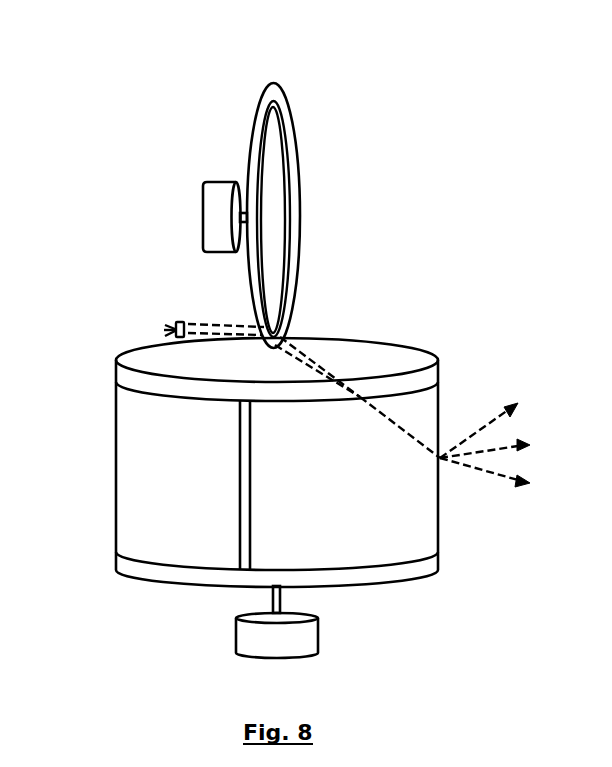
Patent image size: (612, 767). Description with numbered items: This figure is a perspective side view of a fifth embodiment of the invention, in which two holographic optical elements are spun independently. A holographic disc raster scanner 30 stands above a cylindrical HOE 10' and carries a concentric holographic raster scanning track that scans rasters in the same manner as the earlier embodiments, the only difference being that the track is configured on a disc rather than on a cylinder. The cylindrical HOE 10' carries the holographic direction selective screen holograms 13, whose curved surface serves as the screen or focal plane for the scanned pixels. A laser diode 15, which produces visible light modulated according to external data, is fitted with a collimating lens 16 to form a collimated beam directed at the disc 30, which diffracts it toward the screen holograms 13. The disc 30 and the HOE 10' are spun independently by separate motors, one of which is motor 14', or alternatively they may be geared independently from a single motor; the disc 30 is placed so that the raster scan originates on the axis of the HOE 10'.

The cylindrical HOE 10' is at (239, 479).
The holographic direction selective screen hologram 13 is at (257, 585).
The motor 14' is at (311, 640).
The laser diode 15 is at (176, 323).
The collimating lens 16 is at (183, 321).
The holographic disc raster scanner 30 is at (270, 84).